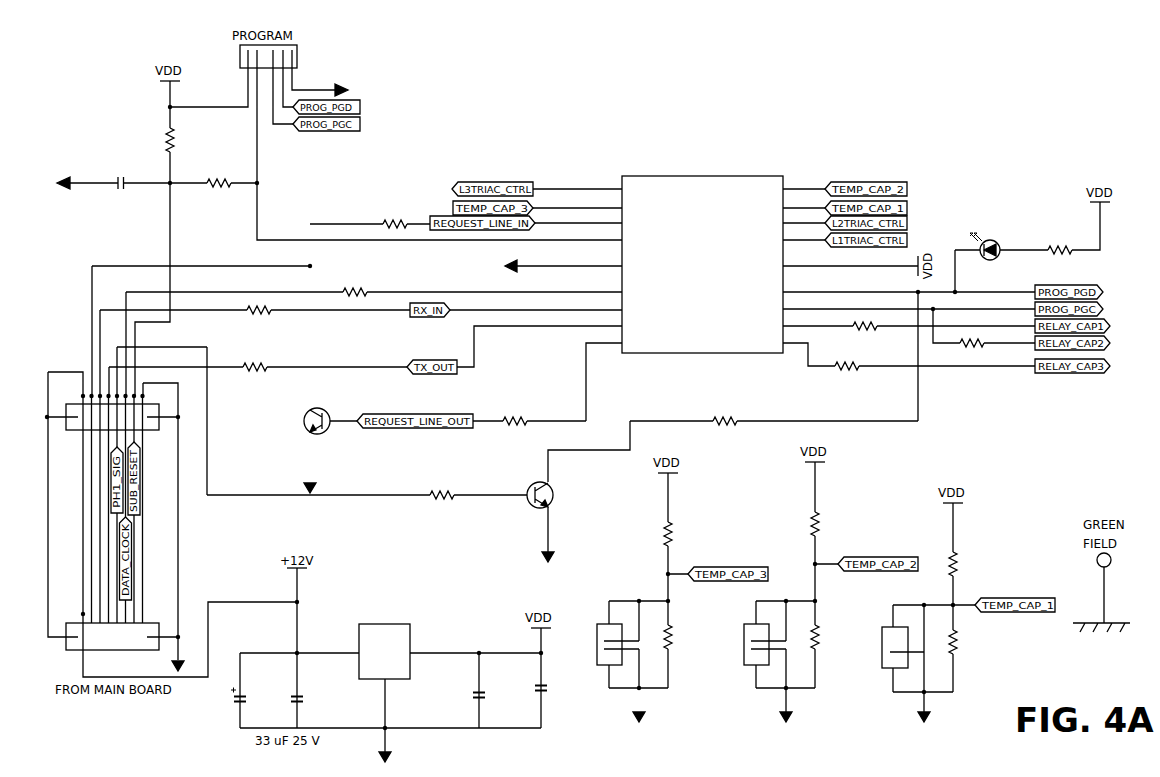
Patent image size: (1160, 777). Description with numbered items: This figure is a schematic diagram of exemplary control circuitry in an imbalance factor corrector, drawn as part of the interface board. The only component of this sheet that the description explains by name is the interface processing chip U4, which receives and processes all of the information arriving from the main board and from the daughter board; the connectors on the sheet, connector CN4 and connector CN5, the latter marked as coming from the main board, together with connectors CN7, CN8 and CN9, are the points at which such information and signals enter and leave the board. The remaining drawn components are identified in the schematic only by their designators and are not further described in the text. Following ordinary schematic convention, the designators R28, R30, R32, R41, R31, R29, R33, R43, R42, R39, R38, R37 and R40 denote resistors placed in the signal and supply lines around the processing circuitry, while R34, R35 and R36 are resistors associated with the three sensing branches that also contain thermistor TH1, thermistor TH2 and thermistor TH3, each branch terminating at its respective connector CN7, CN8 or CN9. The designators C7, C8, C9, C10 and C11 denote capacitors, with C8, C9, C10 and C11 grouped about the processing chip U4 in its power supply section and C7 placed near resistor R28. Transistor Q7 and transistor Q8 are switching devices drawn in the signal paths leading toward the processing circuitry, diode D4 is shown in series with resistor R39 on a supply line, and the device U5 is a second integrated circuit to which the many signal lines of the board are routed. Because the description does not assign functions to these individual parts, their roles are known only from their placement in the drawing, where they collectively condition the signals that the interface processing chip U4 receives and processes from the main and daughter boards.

The resistor 3.3K R28 is at (168, 139).
The resistor 330R R30 is at (213, 183).
The capacitor 0.1uF C7 is at (113, 182).
The resistor 10K R32 is at (370, 218).
The microcontroller PIC16F819-SOIC U5 is at (706, 264).
The resistor 330R R41 is at (374, 286).
The resistor 330R R31 is at (361, 317).
The resistor 330R R29 is at (258, 367).
The transistor Q7 is at (330, 414).
The resistor 10K R33 is at (529, 422).
The resistor 100R R43 is at (774, 422).
The transistor Q8 is at (503, 509).
The resistor 10K R42 is at (331, 495).
The LED D4 is at (1001, 243).
The resistor 1K R39 is at (1073, 236).
The resistor 3.3K R38 is at (909, 328).
The resistor 3.3K R37 is at (909, 364).
The resistor 3.3K R40 is at (993, 346).
The connector CN4 is at (111, 434).
The connector from main board CN5 is at (112, 647).
The interface processing chip U4 is at (383, 679).
The capacitor 10uF C8 is at (237, 690).
The capacitor 33uF 25V C9 is at (305, 697).
The capacitor 10uF C10 is at (476, 690).
The capacitor 0.1uF C11 is at (538, 678).
The resistor 11K R34 is at (666, 523).
The resistor 11K R35 is at (813, 513).
The resistor 11K R36 is at (951, 554).
The thermistor 22K TH1 is at (666, 650).
The thermistor 22K TH2 is at (813, 650).
The thermistor 22K TH3 is at (951, 653).
The thermistor connector CN7 is at (609, 644).
The thermistor connector CN8 is at (756, 644).
The thermistor connector CN9 is at (894, 648).